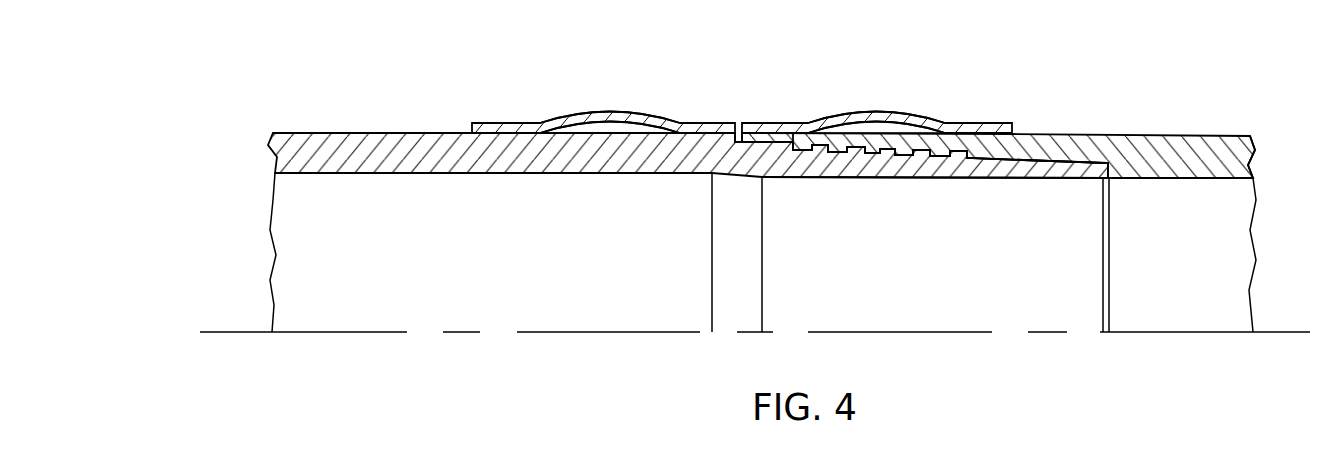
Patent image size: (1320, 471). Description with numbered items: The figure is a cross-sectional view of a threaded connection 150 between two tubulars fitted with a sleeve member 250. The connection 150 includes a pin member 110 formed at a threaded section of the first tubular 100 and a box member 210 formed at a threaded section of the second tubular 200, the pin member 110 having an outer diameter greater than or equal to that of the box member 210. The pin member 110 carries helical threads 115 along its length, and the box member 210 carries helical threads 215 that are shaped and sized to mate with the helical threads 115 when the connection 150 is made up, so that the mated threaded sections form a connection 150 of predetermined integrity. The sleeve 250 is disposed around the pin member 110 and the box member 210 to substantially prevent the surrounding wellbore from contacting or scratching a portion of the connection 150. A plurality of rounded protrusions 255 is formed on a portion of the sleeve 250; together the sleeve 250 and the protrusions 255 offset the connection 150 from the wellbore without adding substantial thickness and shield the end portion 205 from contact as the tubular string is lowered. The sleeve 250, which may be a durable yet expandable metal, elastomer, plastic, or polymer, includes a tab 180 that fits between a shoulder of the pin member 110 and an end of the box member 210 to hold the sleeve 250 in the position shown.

The first tubular 100 is at (368, 150).
The pin member 110 is at (973, 172).
The helical threads 115 is at (869, 150).
The threaded connection 150 is at (734, 84).
The tab 180 is at (737, 143).
The second tubular 200 is at (1205, 153).
The end portion 205 is at (757, 132).
The box member 210 is at (1058, 140).
The helical threads 215 is at (968, 137).
The sleeve member 250 is at (688, 126).
The protrusions 255 is at (602, 108).